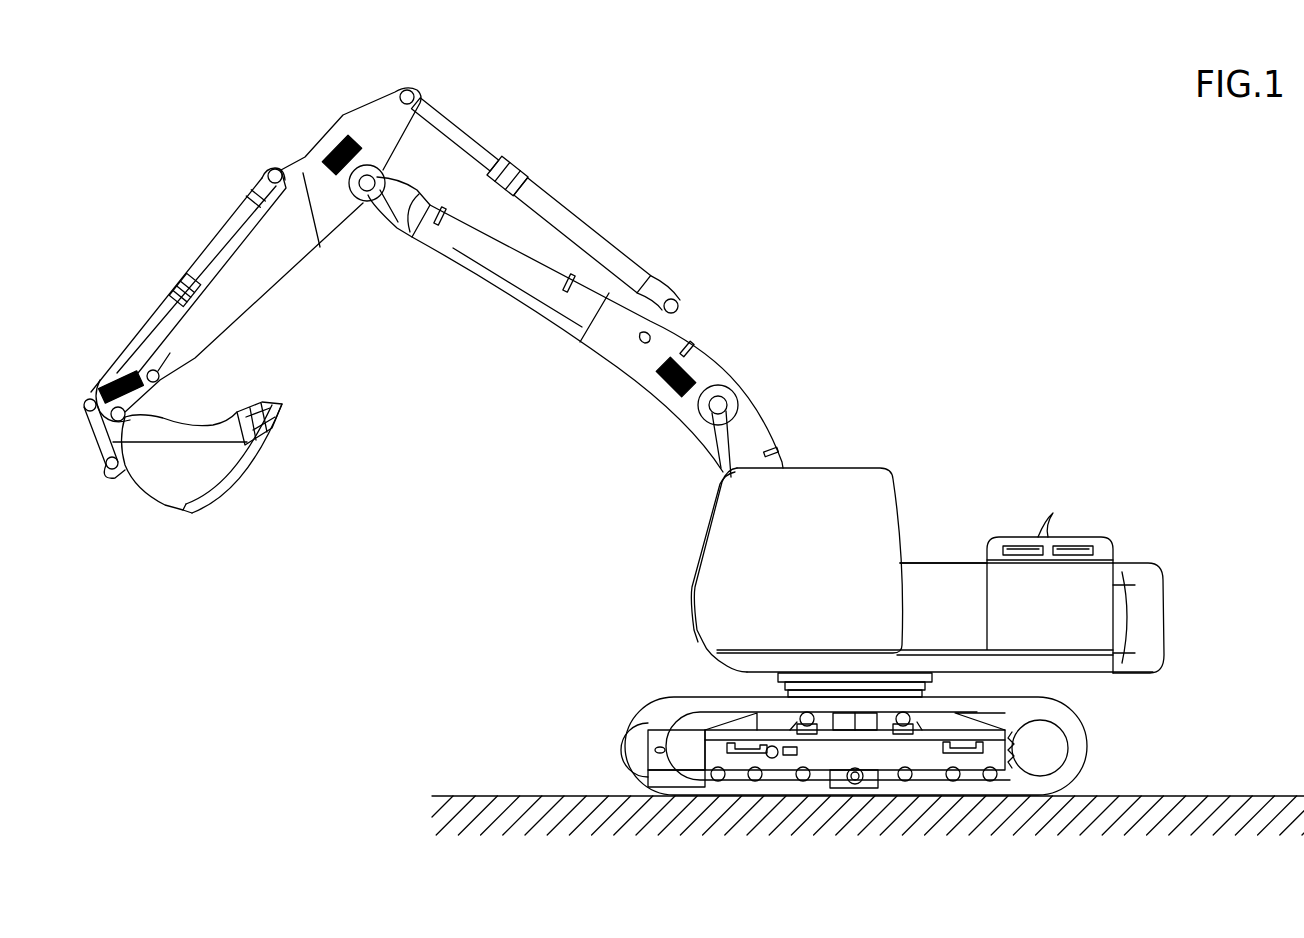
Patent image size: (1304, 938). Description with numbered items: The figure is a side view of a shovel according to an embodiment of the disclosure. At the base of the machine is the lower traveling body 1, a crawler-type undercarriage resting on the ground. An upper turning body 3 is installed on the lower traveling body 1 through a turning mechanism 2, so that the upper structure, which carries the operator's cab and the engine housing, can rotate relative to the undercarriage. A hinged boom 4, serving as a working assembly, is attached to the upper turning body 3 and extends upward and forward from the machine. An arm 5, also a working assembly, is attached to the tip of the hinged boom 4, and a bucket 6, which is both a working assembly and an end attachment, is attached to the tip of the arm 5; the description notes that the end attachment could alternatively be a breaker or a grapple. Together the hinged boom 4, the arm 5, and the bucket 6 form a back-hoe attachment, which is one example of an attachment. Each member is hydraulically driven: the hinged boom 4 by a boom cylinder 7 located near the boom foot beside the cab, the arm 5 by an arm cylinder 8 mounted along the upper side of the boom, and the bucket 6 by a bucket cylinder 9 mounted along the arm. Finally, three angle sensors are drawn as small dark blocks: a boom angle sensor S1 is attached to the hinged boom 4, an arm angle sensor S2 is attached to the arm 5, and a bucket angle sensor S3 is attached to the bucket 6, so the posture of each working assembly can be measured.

The lower traveling body 1 is at (628, 752).
The turning mechanism 2 is at (930, 683).
The upper turning body 3 is at (947, 563).
The hinged boom 4 is at (615, 357).
The arm 5 is at (282, 268).
The bucket 6 is at (178, 500).
The boom cylinder 7 is at (728, 447).
The arm cylinder 8 is at (603, 247).
The bucket cylinder 9 is at (220, 247).
The boom angle sensor S1 is at (683, 372).
The arm angle sensor S2 is at (333, 150).
The bucket angle sensor S3 is at (112, 372).